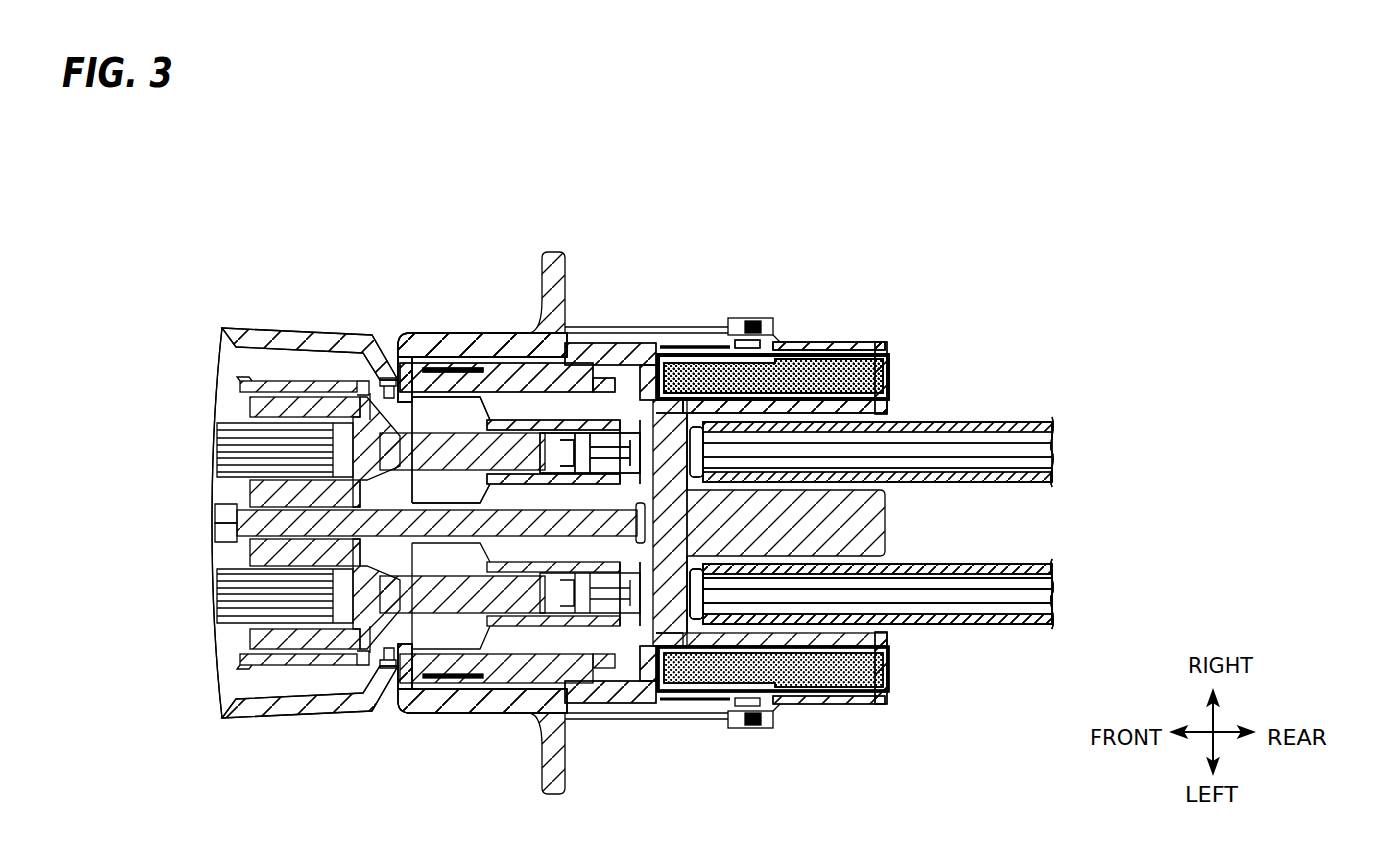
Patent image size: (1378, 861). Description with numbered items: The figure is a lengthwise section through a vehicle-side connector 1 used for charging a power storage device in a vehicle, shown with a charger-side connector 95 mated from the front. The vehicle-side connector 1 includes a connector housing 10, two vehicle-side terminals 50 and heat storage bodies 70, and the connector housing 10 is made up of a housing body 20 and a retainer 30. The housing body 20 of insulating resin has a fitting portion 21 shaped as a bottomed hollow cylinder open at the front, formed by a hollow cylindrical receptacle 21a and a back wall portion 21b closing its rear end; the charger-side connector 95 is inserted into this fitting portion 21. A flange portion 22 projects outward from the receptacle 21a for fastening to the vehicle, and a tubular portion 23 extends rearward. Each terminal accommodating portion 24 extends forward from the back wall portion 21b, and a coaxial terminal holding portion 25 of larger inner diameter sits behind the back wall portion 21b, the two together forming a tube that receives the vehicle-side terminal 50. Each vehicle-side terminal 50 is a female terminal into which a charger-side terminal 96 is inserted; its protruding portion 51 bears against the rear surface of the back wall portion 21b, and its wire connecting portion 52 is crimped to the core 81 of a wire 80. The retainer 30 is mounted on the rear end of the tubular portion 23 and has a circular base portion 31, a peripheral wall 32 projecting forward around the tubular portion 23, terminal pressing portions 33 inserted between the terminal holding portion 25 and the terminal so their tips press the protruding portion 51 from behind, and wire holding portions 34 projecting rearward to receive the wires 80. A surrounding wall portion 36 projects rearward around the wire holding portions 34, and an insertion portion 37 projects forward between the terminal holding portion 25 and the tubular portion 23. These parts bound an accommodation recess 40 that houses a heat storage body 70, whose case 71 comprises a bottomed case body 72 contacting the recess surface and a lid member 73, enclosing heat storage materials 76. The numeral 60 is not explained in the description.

The vehicle-side connector 1 is at (921, 239).
The connector housing 10 is at (858, 234).
The housing body 20 is at (706, 242).
The fitting portion 21 is at (440, 334).
The receptacle 21a is at (468, 334).
The back wall portion 21b is at (606, 393).
The flange portion 22 is at (541, 275).
The tubular portion 23 is at (652, 343).
The terminal accommodating portion 24 is at (509, 372).
The terminal holding portion 25 is at (676, 345).
The retainer 30 is at (880, 302).
The base portion 31 is at (778, 342).
The peripheral wall 32 is at (764, 320).
The terminal pressing portion 33 is at (700, 347).
The wire holding portion 34 is at (840, 355).
The surrounding wall portion 36 is at (858, 343).
The insertion portion 37 is at (726, 340).
The accommodation recess 40 is at (893, 395).
The vehicle-side terminal 50 is at (590, 343).
The protruding portion 51 is at (653, 343).
The wire connecting portion 52 is at (744, 342).
The seal member 60 is at (895, 672).
The heat storage body 70 is at (874, 340).
The case 71 is at (950, 730).
The case body 72 is at (890, 352).
The lid member 73 is at (893, 373).
The heat storage material 76 is at (895, 383).
The wire 80 is at (1018, 565).
The core 81 is at (973, 565).
The charger-side connector 95 is at (264, 330).
The charger-side terminal 96 is at (391, 383).